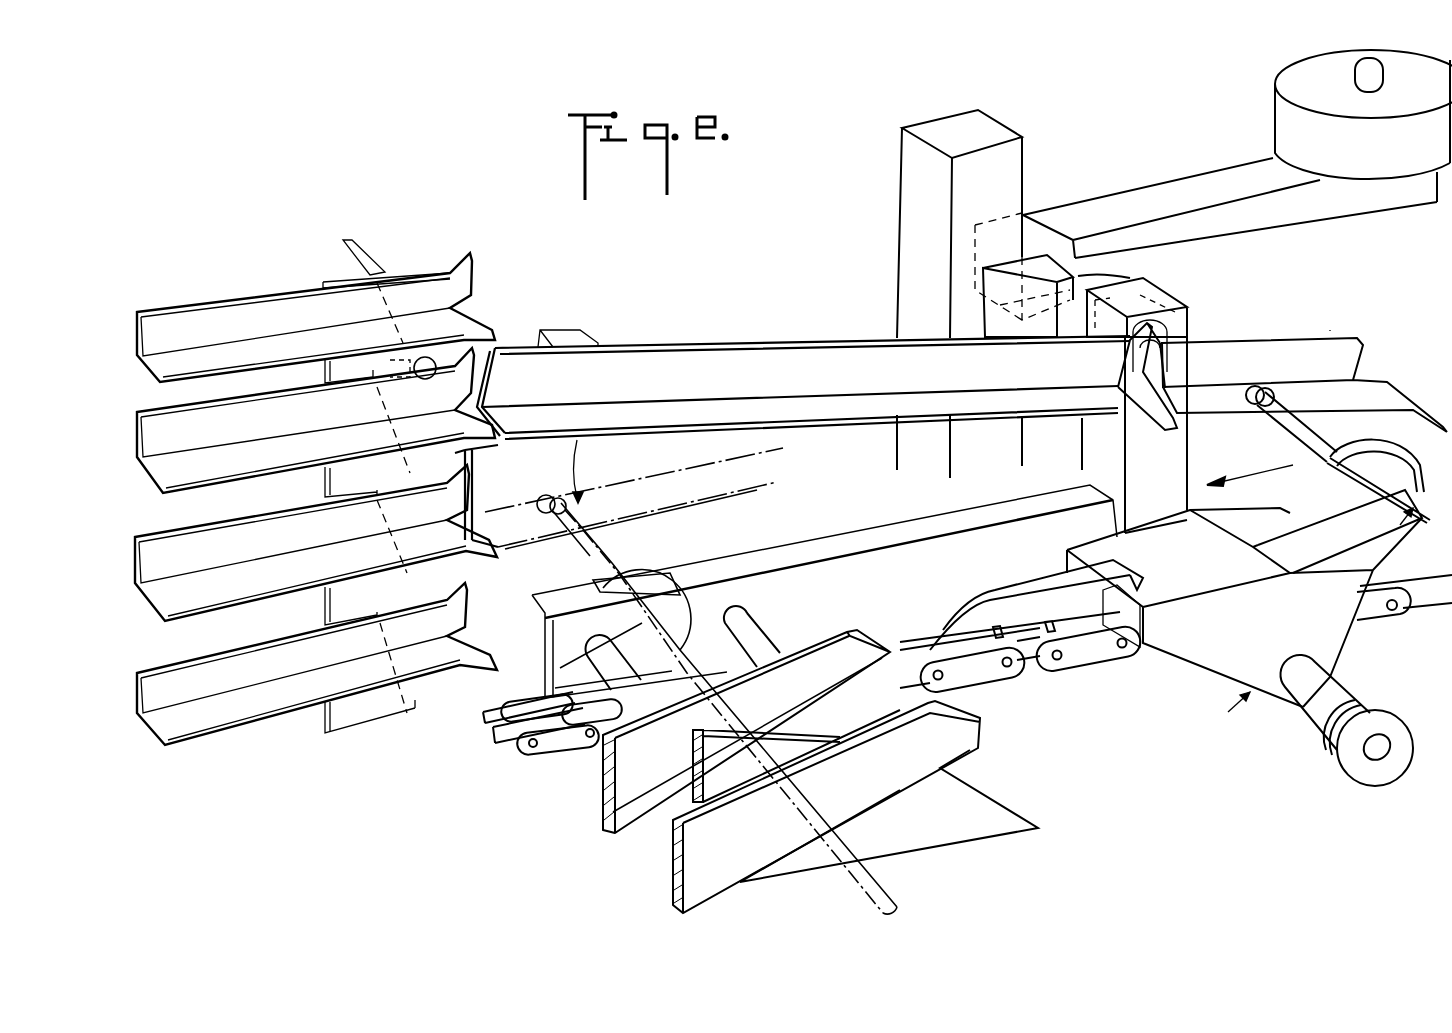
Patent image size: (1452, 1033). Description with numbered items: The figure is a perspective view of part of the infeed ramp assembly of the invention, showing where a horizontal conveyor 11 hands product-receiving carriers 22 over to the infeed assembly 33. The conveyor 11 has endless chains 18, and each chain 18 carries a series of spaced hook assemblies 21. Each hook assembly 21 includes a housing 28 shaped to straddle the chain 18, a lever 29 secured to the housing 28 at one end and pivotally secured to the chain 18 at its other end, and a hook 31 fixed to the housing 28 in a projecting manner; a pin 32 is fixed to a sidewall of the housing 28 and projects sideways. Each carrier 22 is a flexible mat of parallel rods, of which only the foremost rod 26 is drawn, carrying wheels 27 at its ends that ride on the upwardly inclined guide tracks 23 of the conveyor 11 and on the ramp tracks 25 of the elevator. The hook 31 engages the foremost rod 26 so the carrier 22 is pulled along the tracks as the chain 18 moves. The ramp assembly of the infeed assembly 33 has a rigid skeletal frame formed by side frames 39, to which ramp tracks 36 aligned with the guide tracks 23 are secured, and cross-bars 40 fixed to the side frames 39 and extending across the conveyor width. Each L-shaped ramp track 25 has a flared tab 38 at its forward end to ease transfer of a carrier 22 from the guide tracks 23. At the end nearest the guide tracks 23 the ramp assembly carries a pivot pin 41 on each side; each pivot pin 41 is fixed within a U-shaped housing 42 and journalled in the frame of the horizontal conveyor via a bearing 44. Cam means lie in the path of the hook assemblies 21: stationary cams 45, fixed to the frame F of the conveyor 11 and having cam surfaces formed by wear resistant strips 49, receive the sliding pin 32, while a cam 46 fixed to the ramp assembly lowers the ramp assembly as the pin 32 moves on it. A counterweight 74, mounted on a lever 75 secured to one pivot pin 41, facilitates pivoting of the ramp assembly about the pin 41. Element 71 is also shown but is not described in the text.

The horizontal conveyor 11 is at (1392, 327).
The endless chain 18 is at (1038, 660).
The hook assembly 21 is at (1198, 729).
The product-receiving carrier 22 is at (1388, 557).
The guide track 23 is at (1308, 348).
The ramp track 25 is at (245, 308).
The foremost rod 26 is at (1300, 425).
The wheel 27 is at (1268, 387).
The housing 28 is at (1333, 651).
The lever 29 is at (1033, 592).
The hook 31 is at (1150, 422).
The pin 32 is at (1327, 715).
The infeed assembly 33 is at (736, 316).
The ramp track 36 is at (782, 418).
The flared tab 38 is at (1125, 367).
The side frame 39 is at (737, 565).
The cross-bar 40 is at (600, 650).
The pivot pin 41 is at (1160, 333).
The U-shaped housing 42 is at (1165, 297).
The bearing 44 is at (1097, 275).
The stationary cam 45 is at (826, 645).
The cam 46 is at (975, 803).
The wear resistant strip 49 is at (812, 708).
The spacer plate 71 is at (365, 258).
The counterweight 74 is at (1295, 78).
The lever 75 is at (1158, 190).
The frame F is at (985, 302).